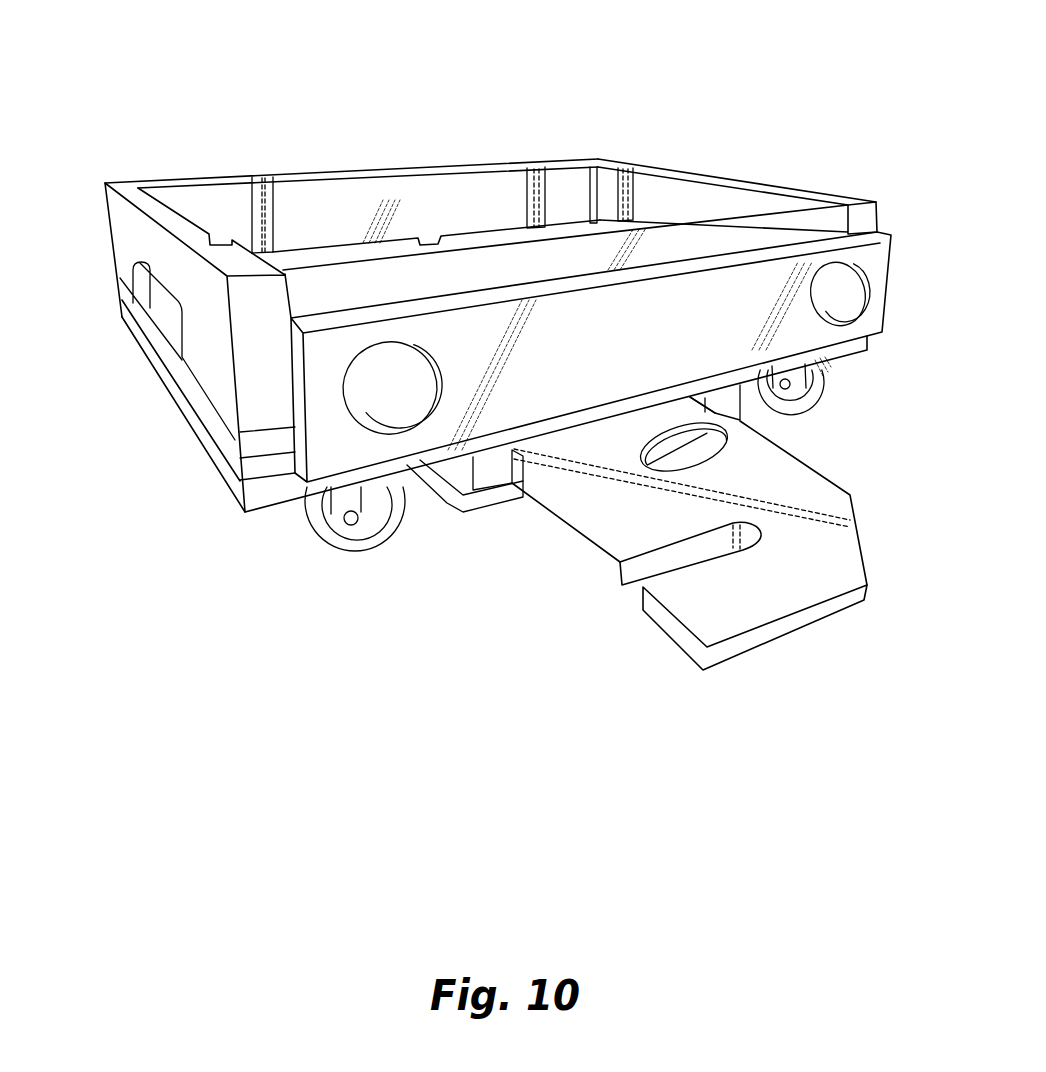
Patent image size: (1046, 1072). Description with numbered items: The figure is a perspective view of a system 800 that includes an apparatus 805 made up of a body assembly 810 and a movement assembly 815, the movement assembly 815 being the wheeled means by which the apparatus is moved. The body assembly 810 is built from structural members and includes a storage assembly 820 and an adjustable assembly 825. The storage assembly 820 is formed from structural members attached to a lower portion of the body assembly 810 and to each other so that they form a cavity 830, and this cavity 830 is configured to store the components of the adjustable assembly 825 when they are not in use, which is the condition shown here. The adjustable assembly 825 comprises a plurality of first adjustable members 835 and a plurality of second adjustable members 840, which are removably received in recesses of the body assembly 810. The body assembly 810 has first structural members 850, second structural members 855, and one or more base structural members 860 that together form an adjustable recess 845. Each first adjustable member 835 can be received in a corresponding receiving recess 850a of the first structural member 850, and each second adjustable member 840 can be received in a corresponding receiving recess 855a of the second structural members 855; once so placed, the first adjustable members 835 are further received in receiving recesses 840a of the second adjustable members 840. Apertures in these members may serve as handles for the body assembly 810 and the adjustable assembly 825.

The system 800 is at (492, 122).
The apparatus 805 is at (678, 170).
The body assembly 810 is at (378, 188).
The movement assembly 815 is at (310, 553).
The storage assembly 820 is at (458, 523).
The adjustable assembly 825 is at (790, 458).
The cavity 830 is at (531, 462).
The first adjustable members 835 is at (781, 303).
The second adjustable members 840 is at (706, 623).
The receiving recesses of second adjustable members 840a is at (620, 604).
The adjustable recess 845 is at (557, 190).
The first structural member 850 is at (738, 181).
The receiving recesses of first structural member 850a is at (196, 235).
The second structural members 855 is at (303, 172).
The receiving recesses of second structural members 855a is at (256, 166).
The base structural member 860 is at (221, 463).